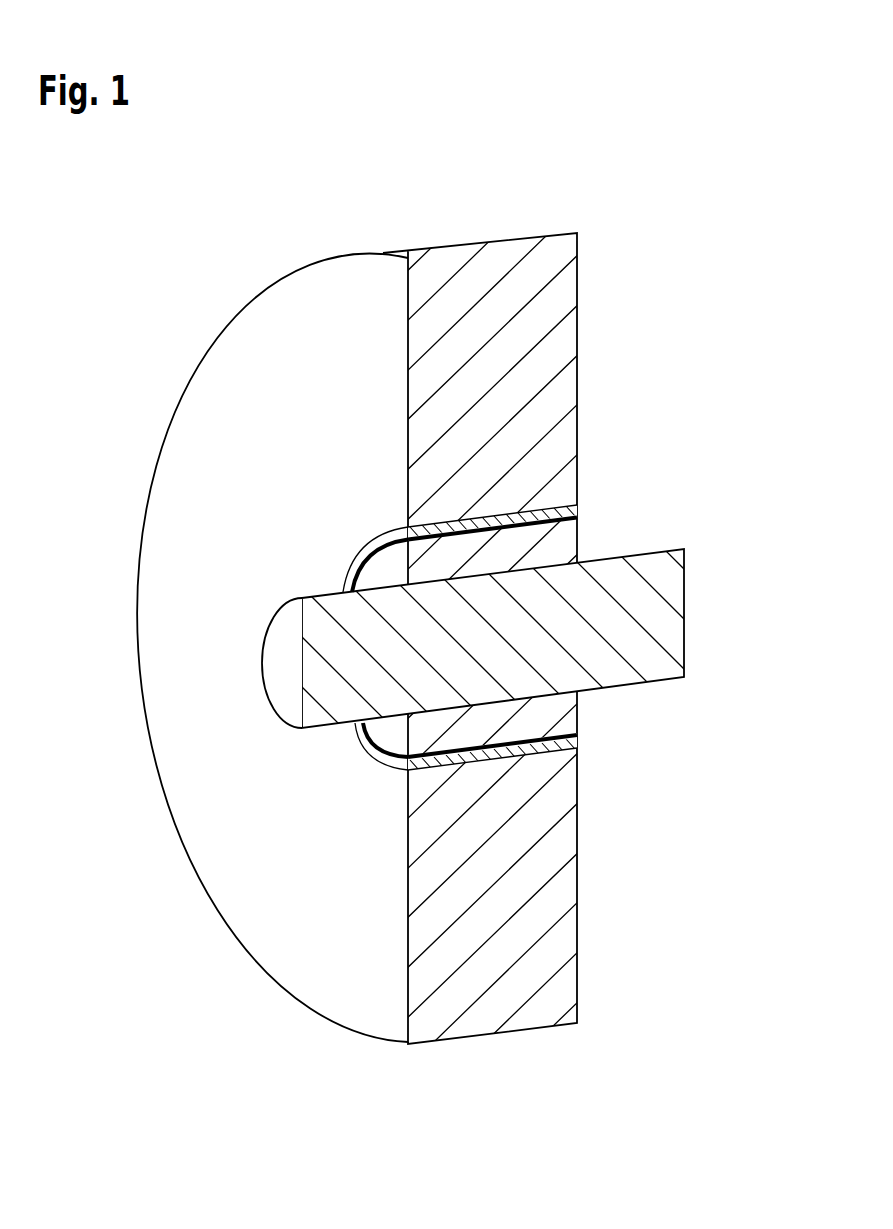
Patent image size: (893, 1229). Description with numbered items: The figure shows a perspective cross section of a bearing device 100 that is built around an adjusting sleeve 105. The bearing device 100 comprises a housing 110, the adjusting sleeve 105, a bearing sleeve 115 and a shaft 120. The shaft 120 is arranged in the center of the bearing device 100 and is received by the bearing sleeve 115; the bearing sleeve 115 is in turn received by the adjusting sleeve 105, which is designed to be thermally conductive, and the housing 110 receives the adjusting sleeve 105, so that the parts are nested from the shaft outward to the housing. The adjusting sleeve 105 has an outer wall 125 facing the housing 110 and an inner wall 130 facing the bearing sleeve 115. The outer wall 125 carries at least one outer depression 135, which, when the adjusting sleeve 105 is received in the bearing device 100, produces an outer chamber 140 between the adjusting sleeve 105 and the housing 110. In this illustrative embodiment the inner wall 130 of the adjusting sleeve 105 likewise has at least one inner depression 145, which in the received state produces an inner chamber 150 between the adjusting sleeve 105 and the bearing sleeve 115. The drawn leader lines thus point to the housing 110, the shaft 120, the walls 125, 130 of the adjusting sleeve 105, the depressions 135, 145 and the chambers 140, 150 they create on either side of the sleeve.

The bearing device 100 is at (256, 240).
The adjusting sleeve 105 is at (577, 511).
The housing 110 is at (563, 387).
The bearing sleeve 115 is at (577, 531).
The shaft 120 is at (672, 586).
The outer wall 125 is at (468, 760).
The inner wall 130 is at (445, 540).
The outer depression 135 is at (541, 770).
The outer chamber 140 is at (550, 750).
The inner depression 145 is at (463, 515).
The inner chamber 150 is at (458, 522).